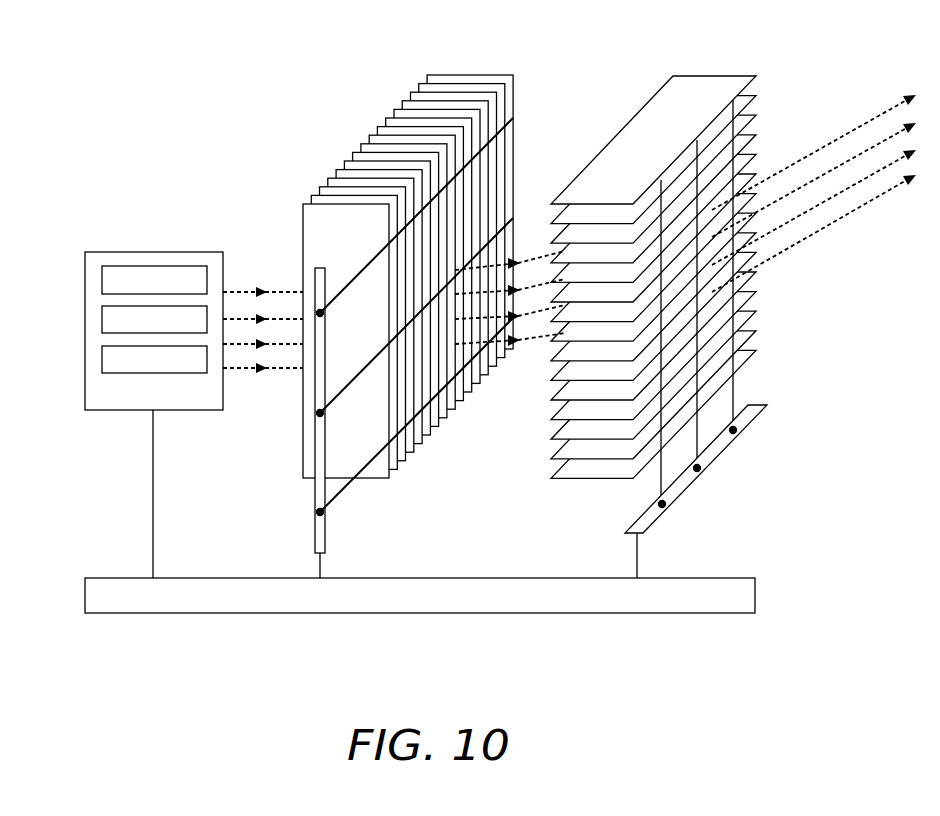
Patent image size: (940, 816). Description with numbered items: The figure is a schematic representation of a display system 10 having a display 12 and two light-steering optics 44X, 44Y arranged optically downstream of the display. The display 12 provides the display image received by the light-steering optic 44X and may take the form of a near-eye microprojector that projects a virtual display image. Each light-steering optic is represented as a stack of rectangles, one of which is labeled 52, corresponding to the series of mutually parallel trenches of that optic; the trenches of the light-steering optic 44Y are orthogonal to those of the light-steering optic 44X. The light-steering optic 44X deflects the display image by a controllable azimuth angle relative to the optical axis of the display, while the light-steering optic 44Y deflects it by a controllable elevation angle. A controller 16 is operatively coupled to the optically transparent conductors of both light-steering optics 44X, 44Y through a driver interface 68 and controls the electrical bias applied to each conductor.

The display system 10 is at (116, 118).
The display 12 is at (142, 399).
The controller 16 is at (409, 606).
The light-steering optic 44X is at (552, 89).
The light-steering optic 44Y is at (519, 462).
The beam steering plate 52 is at (334, 351).
The driver interface 68 is at (325, 537).